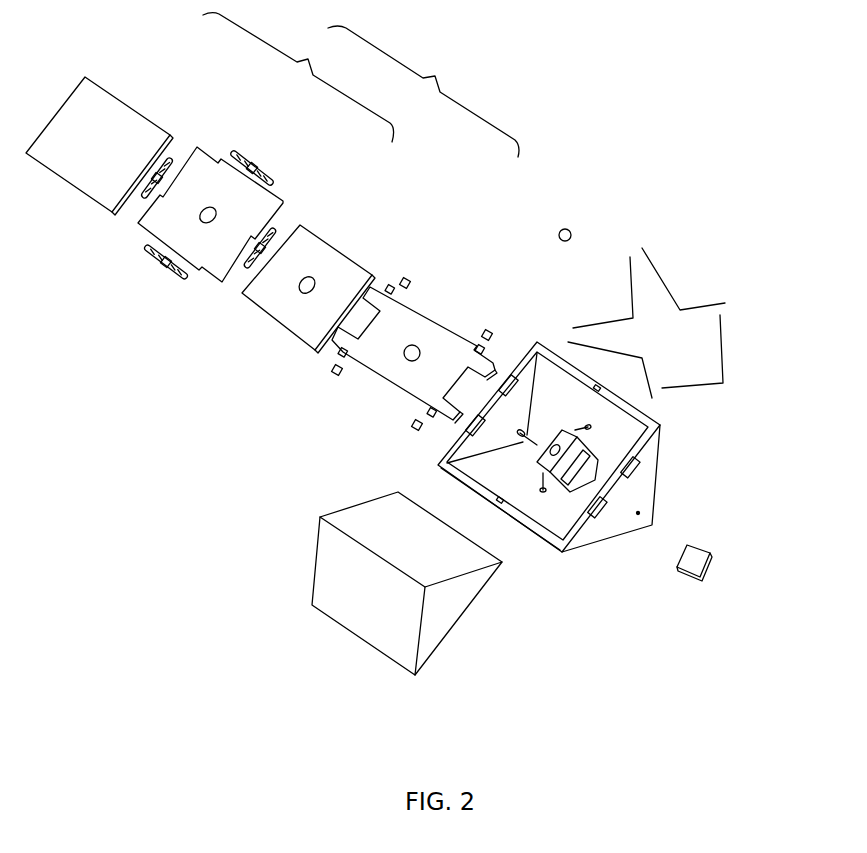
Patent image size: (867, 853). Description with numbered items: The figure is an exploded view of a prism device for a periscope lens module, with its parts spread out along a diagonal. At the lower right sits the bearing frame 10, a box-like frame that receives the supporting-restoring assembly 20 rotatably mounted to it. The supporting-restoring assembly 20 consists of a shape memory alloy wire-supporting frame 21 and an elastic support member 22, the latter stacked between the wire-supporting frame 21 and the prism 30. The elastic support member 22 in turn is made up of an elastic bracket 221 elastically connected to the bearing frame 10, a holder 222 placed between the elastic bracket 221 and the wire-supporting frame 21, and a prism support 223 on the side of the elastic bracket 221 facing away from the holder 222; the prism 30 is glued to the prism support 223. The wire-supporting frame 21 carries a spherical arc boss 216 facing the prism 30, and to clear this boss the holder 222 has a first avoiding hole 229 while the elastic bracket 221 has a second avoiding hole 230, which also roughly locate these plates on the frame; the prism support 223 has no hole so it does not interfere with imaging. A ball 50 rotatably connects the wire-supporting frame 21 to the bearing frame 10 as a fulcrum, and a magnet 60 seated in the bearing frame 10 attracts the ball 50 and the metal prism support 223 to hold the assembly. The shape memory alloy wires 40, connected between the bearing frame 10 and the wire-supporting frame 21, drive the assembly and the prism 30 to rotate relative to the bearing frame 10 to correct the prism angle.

The bearing frame 10 is at (637, 488).
The supporting-restoring assembly 20 is at (423, 91).
The shape memory alloy wire-supporting frame 21 is at (433, 332).
The elastic support member 22 is at (298, 77).
The prism 30 is at (440, 612).
The shape memory alloy wire 40 is at (660, 277).
The ball 50 is at (567, 227).
The magnet 60 is at (692, 565).
The spherical arc boss 216 is at (405, 357).
The elastic bracket 221 is at (202, 185).
The holder 222 is at (325, 250).
The prism support 223 is at (113, 127).
The first avoiding hole 229 is at (300, 290).
The second avoiding hole 230 is at (200, 220).